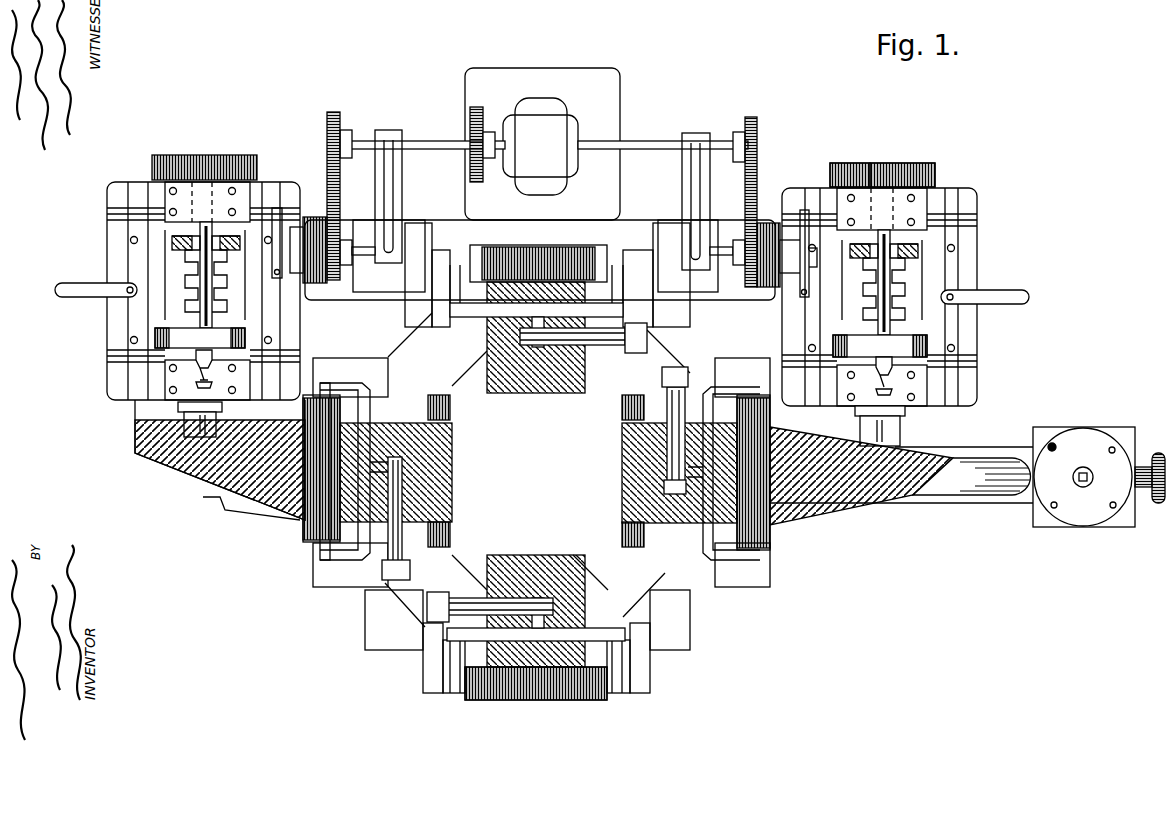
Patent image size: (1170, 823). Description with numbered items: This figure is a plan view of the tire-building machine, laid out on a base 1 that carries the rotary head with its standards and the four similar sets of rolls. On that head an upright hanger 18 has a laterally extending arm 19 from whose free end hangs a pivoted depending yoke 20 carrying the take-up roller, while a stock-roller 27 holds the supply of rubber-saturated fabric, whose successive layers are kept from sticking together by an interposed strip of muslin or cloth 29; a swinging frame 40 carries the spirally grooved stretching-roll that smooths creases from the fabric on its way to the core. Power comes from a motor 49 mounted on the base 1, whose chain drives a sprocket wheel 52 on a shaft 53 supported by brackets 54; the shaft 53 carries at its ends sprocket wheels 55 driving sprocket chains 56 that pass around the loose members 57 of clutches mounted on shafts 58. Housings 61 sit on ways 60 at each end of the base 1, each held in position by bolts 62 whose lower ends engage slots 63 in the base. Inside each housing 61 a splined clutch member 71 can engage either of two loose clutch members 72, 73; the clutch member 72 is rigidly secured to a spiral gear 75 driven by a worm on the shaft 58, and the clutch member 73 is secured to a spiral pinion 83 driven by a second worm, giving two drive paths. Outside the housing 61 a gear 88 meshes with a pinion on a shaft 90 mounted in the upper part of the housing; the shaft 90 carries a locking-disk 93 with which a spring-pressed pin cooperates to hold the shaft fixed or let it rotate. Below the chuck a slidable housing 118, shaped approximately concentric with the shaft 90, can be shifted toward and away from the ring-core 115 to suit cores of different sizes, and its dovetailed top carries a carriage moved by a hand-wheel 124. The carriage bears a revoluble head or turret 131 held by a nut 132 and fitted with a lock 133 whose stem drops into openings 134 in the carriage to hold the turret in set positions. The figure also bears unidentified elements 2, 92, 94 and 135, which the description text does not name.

The base 1 is at (612, 88).
The frame 2 is at (390, 352).
The upright hanger 18 is at (690, 375).
The laterally extending arm 19 is at (668, 440).
The depending yoke 20 is at (312, 556).
The stock-roller 27 is at (634, 407).
The strip of muslin or cloth 29 is at (470, 700).
The swinging frame 40 is at (635, 688).
The motor 49 is at (540, 146).
The sprocket wheel 52 is at (470, 118).
The shaft 53 is at (643, 143).
The bracket 54 is at (695, 130).
The sprocket wheel 55 is at (758, 137).
The sprocket chain 56 is at (748, 186).
The loose clutch member 57 is at (768, 275).
The shaft 58 is at (722, 272).
The ways 60 is at (972, 223).
The housing 61 is at (950, 197).
The bolt 62 is at (952, 240).
The slot 63 is at (965, 250).
The clutch member 71 is at (182, 278).
The clutch member 72 is at (182, 262).
The clutch member 73 is at (175, 318).
The spiral gear 75 is at (165, 235).
The spiral pinion 83 is at (160, 338).
The gear 88 is at (842, 163).
The shaft 90 is at (900, 430).
The base 92 is at (182, 390).
The locking-disk 93 is at (185, 342).
The spindle tip 94 is at (208, 370).
The ring-core 115 is at (987, 470).
The housing 118 is at (1002, 497).
The hand-wheel 124 is at (1099, 492).
The turret 131 is at (1087, 432).
The nut 132 is at (1083, 487).
The lock 133 is at (1056, 447).
The opening 134 is at (1056, 508).
The pin 135 is at (1146, 418).